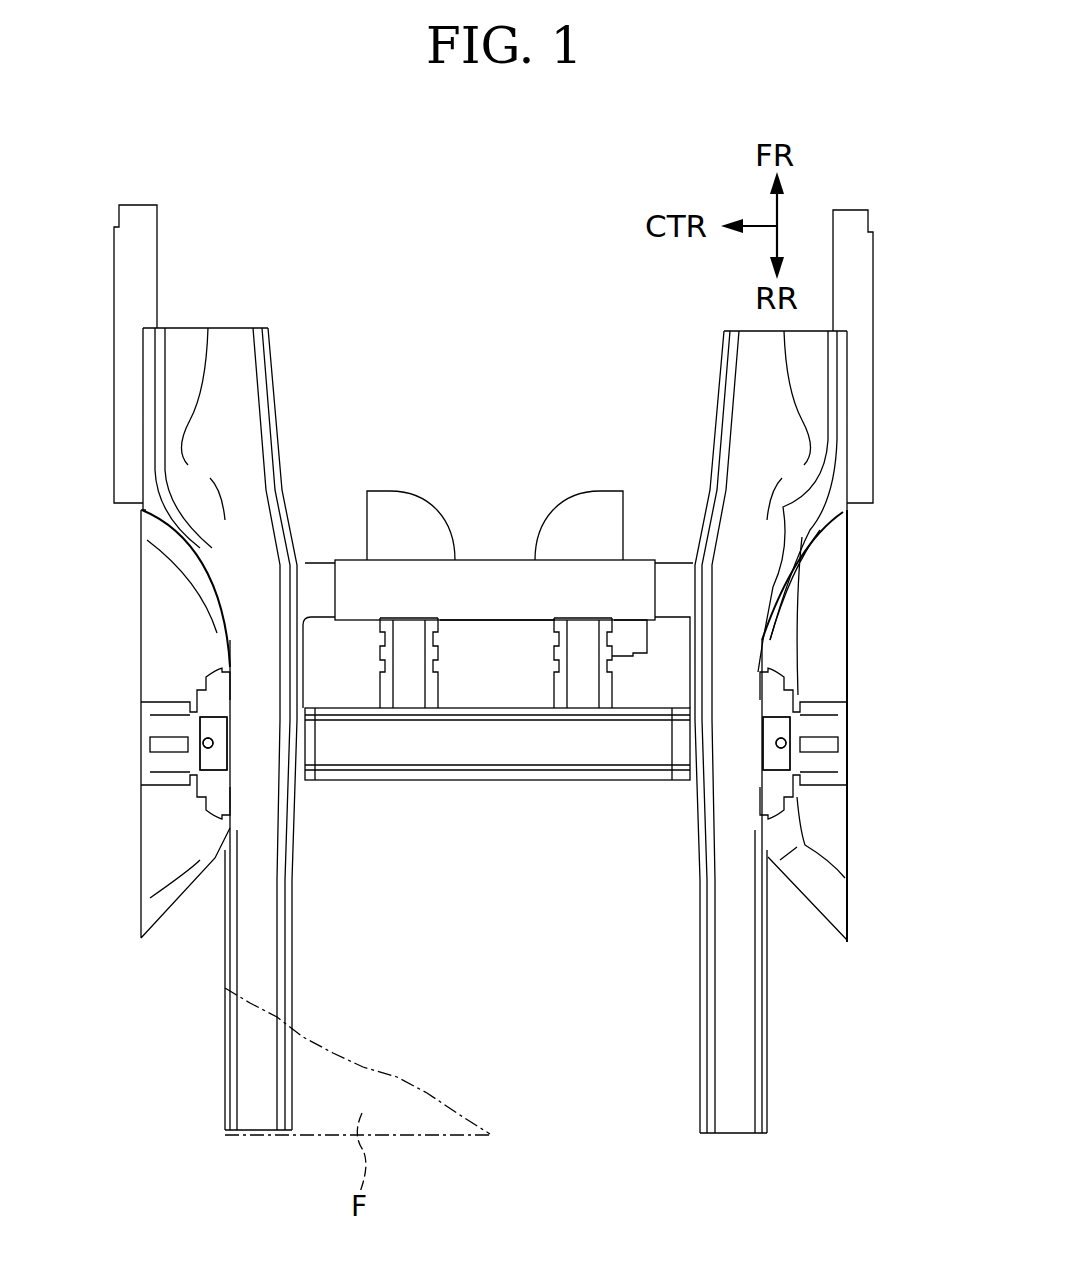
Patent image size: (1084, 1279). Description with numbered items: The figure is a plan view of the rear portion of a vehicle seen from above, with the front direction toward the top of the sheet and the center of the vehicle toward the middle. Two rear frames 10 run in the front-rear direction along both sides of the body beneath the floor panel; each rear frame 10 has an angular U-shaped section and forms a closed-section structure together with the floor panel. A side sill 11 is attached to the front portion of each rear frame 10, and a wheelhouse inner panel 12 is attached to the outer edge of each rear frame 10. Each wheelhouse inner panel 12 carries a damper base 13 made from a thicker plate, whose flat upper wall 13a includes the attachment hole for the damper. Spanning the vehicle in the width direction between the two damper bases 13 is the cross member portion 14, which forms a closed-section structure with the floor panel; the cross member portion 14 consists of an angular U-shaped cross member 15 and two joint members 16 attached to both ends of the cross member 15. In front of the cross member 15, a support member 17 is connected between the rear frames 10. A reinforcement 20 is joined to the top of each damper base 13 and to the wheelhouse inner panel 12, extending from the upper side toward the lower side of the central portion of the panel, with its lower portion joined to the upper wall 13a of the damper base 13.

The rear frame 10 is at (701, 1020).
The side sill 11 is at (928, 242).
The wheelhouse inner panel 12 is at (825, 600).
The damper base 13 is at (495, 743).
The upper wall 13a is at (600, 868).
The cross member portion 14 is at (470, 790).
The cross member 15 is at (488, 708).
The joint member 16 is at (680, 710).
The support member 17 is at (502, 558).
The reinforcement 20 is at (840, 722).